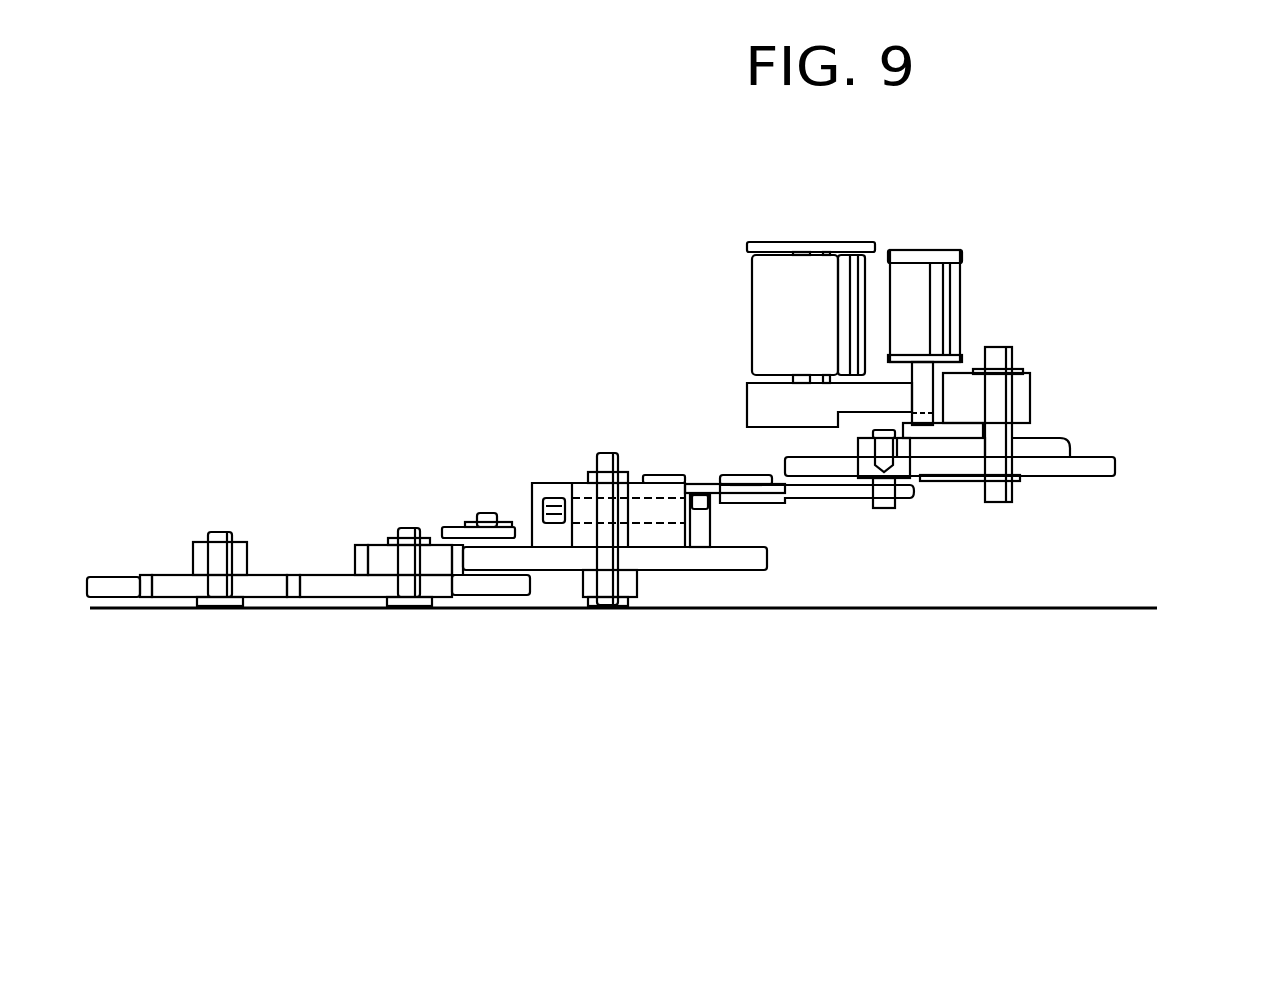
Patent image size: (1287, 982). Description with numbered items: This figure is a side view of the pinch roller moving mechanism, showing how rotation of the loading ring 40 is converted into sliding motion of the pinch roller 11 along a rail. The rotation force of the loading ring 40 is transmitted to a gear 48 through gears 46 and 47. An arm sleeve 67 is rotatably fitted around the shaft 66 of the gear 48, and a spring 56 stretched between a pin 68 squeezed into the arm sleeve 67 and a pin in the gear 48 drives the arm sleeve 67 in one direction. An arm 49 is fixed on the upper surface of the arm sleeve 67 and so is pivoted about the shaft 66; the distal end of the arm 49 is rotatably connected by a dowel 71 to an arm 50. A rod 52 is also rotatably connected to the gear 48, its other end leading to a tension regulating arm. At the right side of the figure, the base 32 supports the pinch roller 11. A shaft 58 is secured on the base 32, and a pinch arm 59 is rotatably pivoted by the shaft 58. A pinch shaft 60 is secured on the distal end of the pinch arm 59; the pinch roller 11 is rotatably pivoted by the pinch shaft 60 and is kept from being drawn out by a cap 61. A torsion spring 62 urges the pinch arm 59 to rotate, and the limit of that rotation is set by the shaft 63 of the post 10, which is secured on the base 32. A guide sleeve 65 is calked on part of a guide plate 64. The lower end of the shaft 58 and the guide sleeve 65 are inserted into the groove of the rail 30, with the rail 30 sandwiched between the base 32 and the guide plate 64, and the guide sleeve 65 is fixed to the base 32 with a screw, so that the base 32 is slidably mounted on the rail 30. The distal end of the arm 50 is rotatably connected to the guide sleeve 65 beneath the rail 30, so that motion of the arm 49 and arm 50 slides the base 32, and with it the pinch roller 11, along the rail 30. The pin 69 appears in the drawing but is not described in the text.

The post 10 is at (920, 250).
The pinch roller 11 is at (763, 287).
The rail 30 is at (1100, 470).
The base 32 is at (1063, 443).
The loading ring 40 is at (108, 580).
The gear 46 is at (263, 597).
The gear 47 is at (453, 597).
The gear 48 is at (728, 568).
The arm 49 is at (690, 482).
The arm 50 is at (837, 499).
The rod 52 is at (448, 527).
The spring 56 is at (657, 480).
The shaft 58 is at (1005, 347).
The pinch arm 59 is at (750, 410).
The pinch shaft 60 is at (802, 373).
The cap 61 is at (812, 242).
The torsion spring 62 is at (1030, 440).
The shaft 63 is at (943, 380).
The guide plate 64 is at (958, 481).
The guide sleeve 65 is at (883, 510).
The shaft 66 is at (608, 460).
The arm sleeve 67 is at (533, 507).
The pin 68 is at (550, 498).
The pin 69 is at (705, 532).
The dowel 71 is at (745, 475).